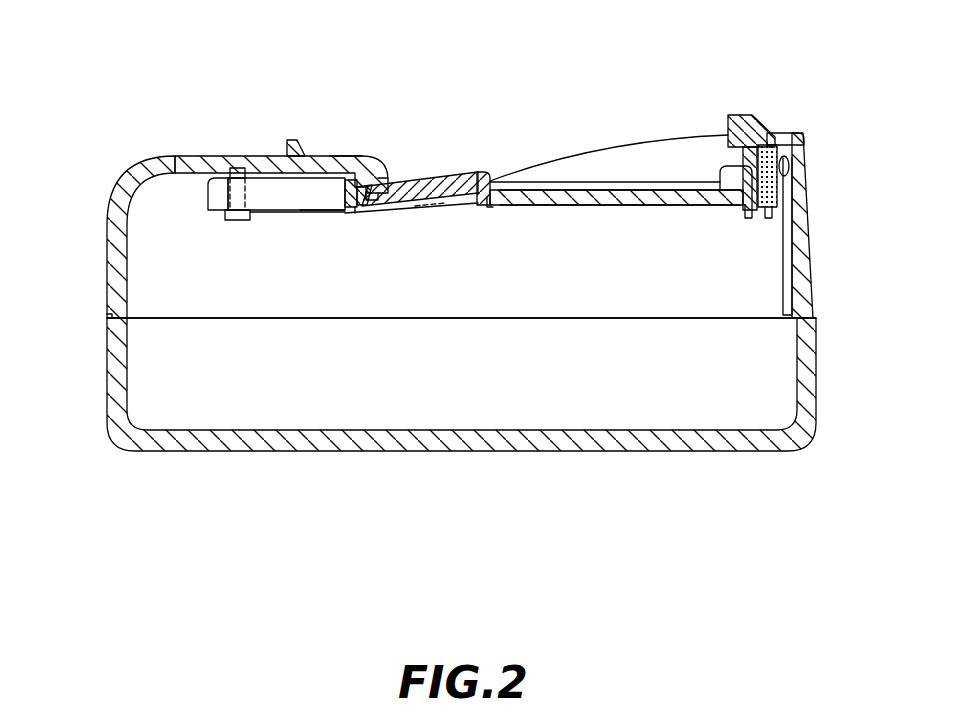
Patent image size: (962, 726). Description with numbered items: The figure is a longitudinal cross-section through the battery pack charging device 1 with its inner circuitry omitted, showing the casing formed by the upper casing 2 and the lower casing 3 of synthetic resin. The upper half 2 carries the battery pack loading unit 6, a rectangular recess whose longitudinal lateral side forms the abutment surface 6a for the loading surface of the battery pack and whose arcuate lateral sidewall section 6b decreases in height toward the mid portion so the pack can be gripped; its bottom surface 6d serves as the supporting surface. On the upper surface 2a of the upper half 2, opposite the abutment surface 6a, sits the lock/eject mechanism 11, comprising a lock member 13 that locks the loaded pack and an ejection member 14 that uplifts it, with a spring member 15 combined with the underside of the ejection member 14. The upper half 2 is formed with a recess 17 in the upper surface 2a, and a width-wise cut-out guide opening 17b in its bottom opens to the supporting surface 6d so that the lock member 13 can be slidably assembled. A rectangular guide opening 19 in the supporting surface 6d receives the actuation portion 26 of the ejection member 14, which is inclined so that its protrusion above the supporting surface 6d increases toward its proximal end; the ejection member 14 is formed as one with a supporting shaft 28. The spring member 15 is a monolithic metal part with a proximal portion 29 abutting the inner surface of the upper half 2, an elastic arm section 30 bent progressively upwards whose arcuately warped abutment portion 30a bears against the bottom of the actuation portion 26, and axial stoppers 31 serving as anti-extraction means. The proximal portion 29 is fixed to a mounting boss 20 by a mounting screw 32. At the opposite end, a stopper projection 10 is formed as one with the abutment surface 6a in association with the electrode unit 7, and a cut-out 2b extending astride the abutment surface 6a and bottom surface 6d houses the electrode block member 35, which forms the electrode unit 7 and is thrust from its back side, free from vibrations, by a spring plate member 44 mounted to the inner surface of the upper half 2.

The battery pack charging device 1 is at (108, 41).
The upper casing 2 is at (120, 298).
The upper surface 2a is at (240, 156).
The cut-out 2b is at (795, 236).
The lower casing 3 is at (114, 388).
The battery pack loading unit 6 is at (637, 168).
The abutment surface 6a is at (773, 137).
The lateral sidewall section 6b is at (672, 146).
The bottom surface 6d is at (583, 158).
The electrode unit 7 is at (714, 152).
The stopper projection 10 is at (748, 114).
The lock/eject mechanism 11 is at (376, 126).
The lock member 13 is at (338, 156).
The ejection member 14 is at (465, 173).
The spring member 15 is at (305, 210).
The recess 17 is at (268, 156).
The cut-out guide opening 17b is at (392, 175).
The guide opening 19 is at (493, 205).
The mounting boss 20 is at (205, 178).
The actuation portion 26 is at (432, 178).
The supporting shaft 28 is at (352, 207).
The proximal portion 29 is at (342, 212).
The elastic arm section 30 is at (412, 205).
The abutment portion 30a is at (468, 203).
The axial stopper 31 is at (318, 207).
The mounting screw 32 is at (227, 212).
The electrode block member 35 is at (766, 182).
The spring plate member 44 is at (806, 240).